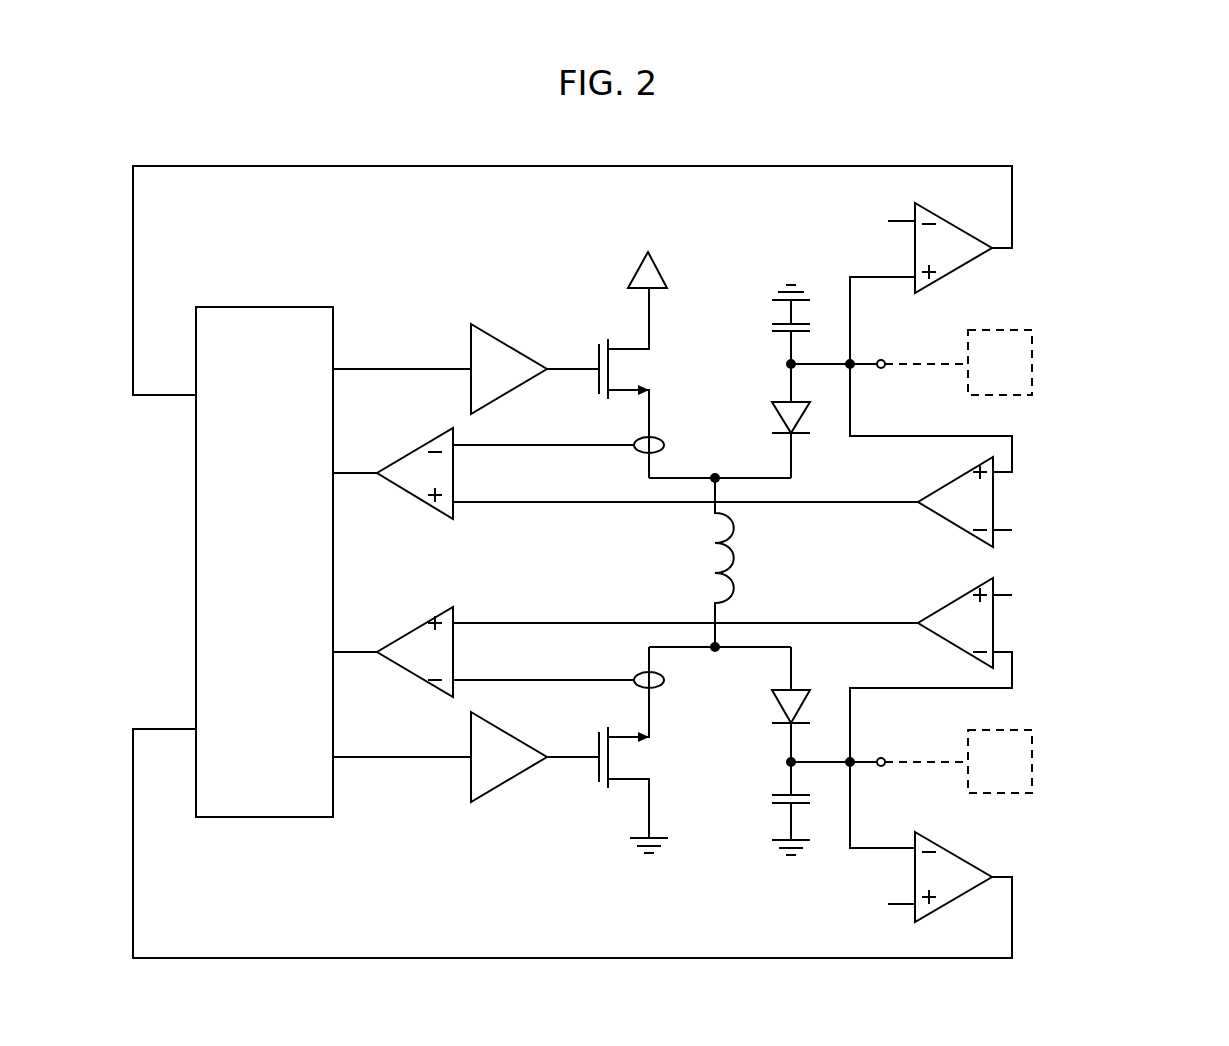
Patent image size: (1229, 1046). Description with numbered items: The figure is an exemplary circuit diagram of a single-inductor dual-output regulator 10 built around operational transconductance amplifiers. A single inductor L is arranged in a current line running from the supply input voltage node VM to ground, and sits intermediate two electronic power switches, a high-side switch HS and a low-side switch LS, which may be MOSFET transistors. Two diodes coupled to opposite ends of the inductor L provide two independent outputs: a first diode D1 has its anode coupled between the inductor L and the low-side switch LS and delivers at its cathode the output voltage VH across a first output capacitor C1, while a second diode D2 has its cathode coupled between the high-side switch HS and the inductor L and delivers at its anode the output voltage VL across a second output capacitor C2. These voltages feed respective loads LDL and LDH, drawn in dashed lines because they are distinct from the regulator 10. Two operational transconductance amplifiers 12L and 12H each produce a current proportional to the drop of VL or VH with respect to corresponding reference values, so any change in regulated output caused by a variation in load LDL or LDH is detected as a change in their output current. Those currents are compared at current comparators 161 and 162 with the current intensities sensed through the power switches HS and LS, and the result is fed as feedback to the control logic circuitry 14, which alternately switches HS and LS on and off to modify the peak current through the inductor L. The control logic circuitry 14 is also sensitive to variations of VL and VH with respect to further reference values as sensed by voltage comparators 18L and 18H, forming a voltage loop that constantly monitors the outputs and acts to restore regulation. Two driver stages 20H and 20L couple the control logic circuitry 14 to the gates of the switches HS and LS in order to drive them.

The single-inductor dual-output regulator 10 is at (1125, 161).
The control logic circuitry 14 is at (224, 575).
The driver stage 20H is at (473, 345).
The driver stage 20L is at (473, 785).
The current comparator 161 is at (401, 462).
The current comparator 162 is at (401, 655).
The operational transconductance amplifier 12L is at (948, 527).
The operational transconductance amplifier 12H is at (935, 612).
The voltage comparator 18L is at (960, 258).
The voltage comparator 18H is at (965, 862).
The high-side switch HS is at (646, 368).
The low-side switch LS is at (646, 757).
The supply input voltage node VM is at (630, 273).
The inductor L is at (711, 558).
The first output capacitor C1 is at (780, 798).
The second output capacitor C2 is at (783, 320).
The first diode D1 is at (775, 698).
The second diode D2 is at (778, 420).
The output voltage VL is at (848, 344).
The output voltage VH is at (849, 741).
The load LDL is at (1020, 366).
The load LDH is at (1020, 766).